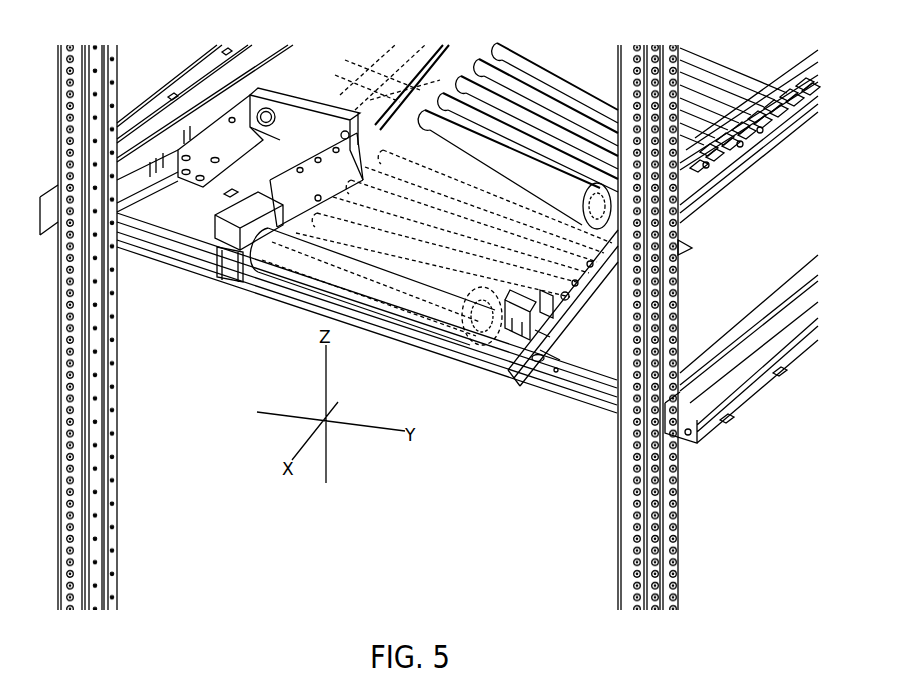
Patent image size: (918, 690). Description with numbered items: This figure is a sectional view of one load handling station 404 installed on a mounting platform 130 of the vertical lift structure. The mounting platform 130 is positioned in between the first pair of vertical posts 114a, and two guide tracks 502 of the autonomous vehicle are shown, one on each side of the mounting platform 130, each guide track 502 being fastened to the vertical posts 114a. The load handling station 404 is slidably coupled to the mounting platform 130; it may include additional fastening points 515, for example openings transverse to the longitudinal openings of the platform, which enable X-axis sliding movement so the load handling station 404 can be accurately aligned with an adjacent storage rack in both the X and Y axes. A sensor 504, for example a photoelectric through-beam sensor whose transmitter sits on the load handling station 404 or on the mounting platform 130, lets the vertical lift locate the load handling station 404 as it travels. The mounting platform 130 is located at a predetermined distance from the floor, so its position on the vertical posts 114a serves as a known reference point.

The first pair of vertical posts 114a is at (636, 518).
The guide tracks 502 is at (117, 140).
The sensor 504 is at (220, 262).
The load handling station 404 is at (495, 290).
The additional fastening points 515 is at (528, 375).
The mounting platform 130 is at (577, 383).